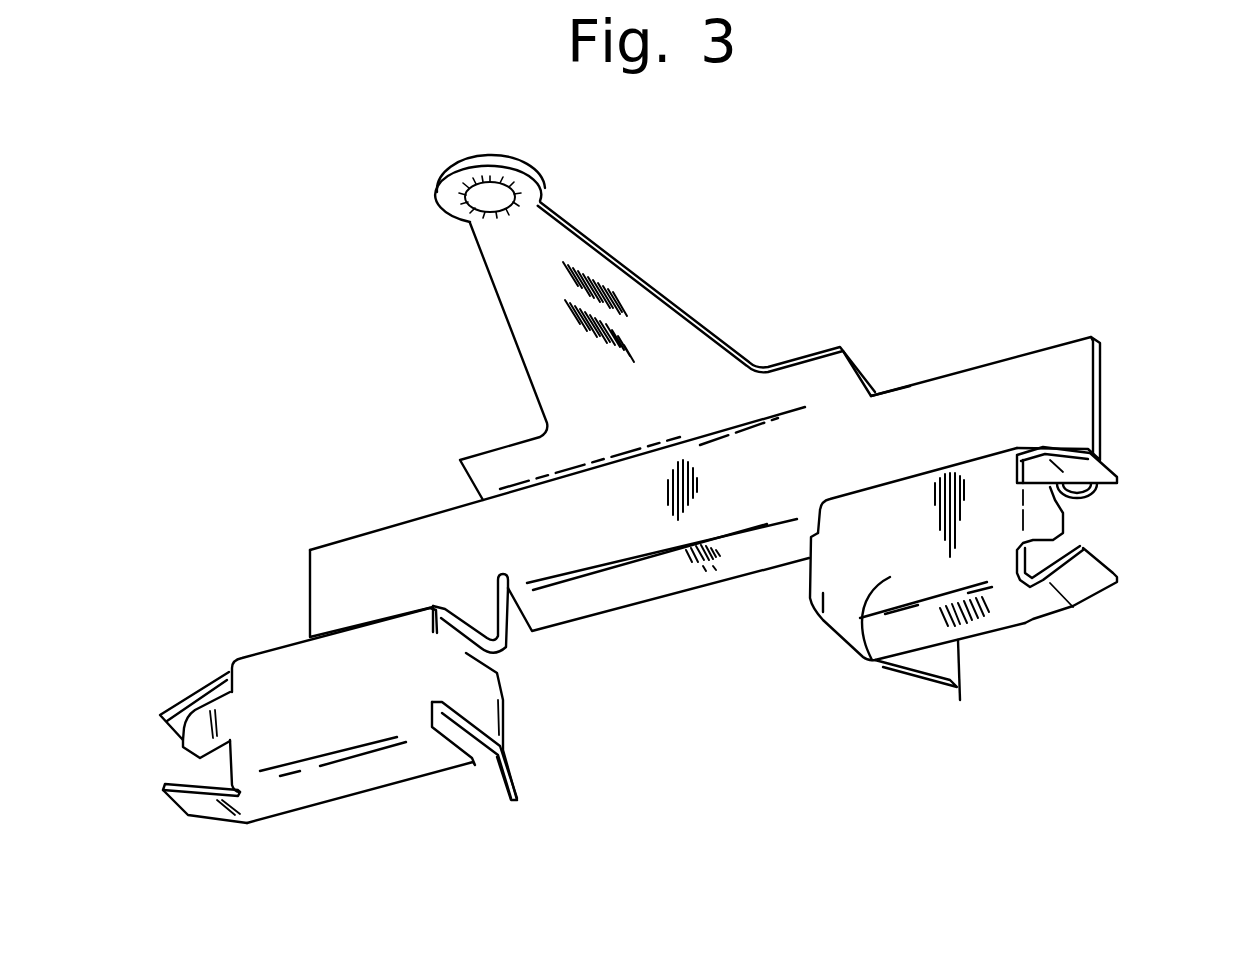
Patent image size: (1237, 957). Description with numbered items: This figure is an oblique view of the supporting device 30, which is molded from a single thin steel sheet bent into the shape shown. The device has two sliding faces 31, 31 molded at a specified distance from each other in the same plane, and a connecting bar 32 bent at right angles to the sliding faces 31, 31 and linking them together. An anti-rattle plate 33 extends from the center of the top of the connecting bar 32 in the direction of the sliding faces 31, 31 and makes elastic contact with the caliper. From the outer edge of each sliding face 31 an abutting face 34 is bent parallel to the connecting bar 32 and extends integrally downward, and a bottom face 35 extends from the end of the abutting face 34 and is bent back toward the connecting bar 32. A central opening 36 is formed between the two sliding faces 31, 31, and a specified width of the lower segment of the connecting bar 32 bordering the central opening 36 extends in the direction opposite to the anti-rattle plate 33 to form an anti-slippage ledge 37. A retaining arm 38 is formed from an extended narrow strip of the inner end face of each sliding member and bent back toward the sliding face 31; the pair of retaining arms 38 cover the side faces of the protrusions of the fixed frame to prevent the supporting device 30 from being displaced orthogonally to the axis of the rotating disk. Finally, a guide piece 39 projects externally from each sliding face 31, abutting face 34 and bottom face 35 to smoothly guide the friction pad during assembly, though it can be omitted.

The supporting device 30 is at (942, 328).
The sliding face 31 is at (273, 648).
The connecting bar 32 is at (1077, 393).
The anti-rattle plate 33 is at (673, 307).
The abutting face 34 is at (872, 660).
The bottom face 35 is at (1025, 612).
The central opening 36 is at (758, 627).
The anti-slippage ledge 37 is at (663, 580).
The retaining arm 38 is at (488, 708).
The guide piece 39 is at (1120, 553).